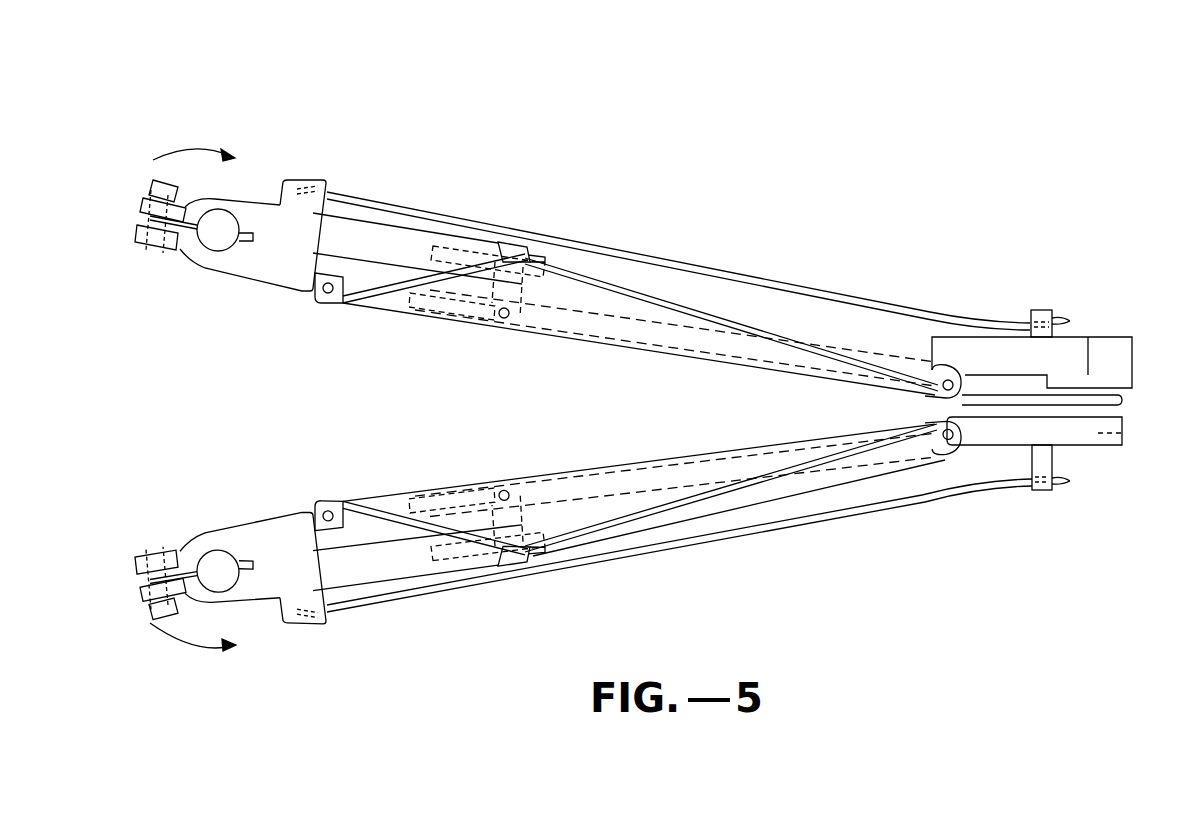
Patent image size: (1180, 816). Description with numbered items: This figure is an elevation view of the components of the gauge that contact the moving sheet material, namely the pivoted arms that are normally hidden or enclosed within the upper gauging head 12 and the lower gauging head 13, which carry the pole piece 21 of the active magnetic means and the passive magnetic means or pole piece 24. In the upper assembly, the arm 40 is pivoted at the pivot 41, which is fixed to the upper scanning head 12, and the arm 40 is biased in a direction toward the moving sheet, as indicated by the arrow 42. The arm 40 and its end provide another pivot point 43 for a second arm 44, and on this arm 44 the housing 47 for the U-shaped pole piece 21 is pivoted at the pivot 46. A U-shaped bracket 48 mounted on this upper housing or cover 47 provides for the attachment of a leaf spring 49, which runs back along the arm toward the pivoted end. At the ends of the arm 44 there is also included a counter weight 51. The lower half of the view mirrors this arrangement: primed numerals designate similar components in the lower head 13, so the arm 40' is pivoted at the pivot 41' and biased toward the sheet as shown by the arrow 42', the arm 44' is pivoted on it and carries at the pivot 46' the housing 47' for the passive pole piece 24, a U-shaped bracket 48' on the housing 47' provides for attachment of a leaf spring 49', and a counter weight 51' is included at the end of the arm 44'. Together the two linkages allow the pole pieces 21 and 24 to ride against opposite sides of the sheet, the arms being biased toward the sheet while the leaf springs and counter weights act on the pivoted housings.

The upper gauging head 12 is at (664, 233).
The lower gauging head 13 is at (771, 572).
The pole piece 21 is at (1133, 400).
The passive magnetic means or pole piece 24 is at (1133, 437).
The arm 40 is at (230, 255).
The arm 40' is at (230, 566).
The pivot 41 is at (225, 261).
The pivot 41' is at (210, 547).
The arrow 42 is at (194, 139).
The arrow 42' is at (193, 656).
The pivot point 43 is at (503, 318).
The arm 44 is at (718, 299).
The arm 44' is at (717, 509).
The pivot 46 is at (913, 359).
The pivot 46' is at (943, 438).
The housing 47 is at (1038, 338).
The housing 47' is at (1059, 455).
The U-shaped bracket 48 is at (1036, 298).
The U-shaped bracket 48' is at (1051, 467).
The leaf spring 49 is at (678, 261).
The leaf spring 49' is at (679, 545).
The counter weight 51 is at (347, 314).
The counter weight 51' is at (319, 490).